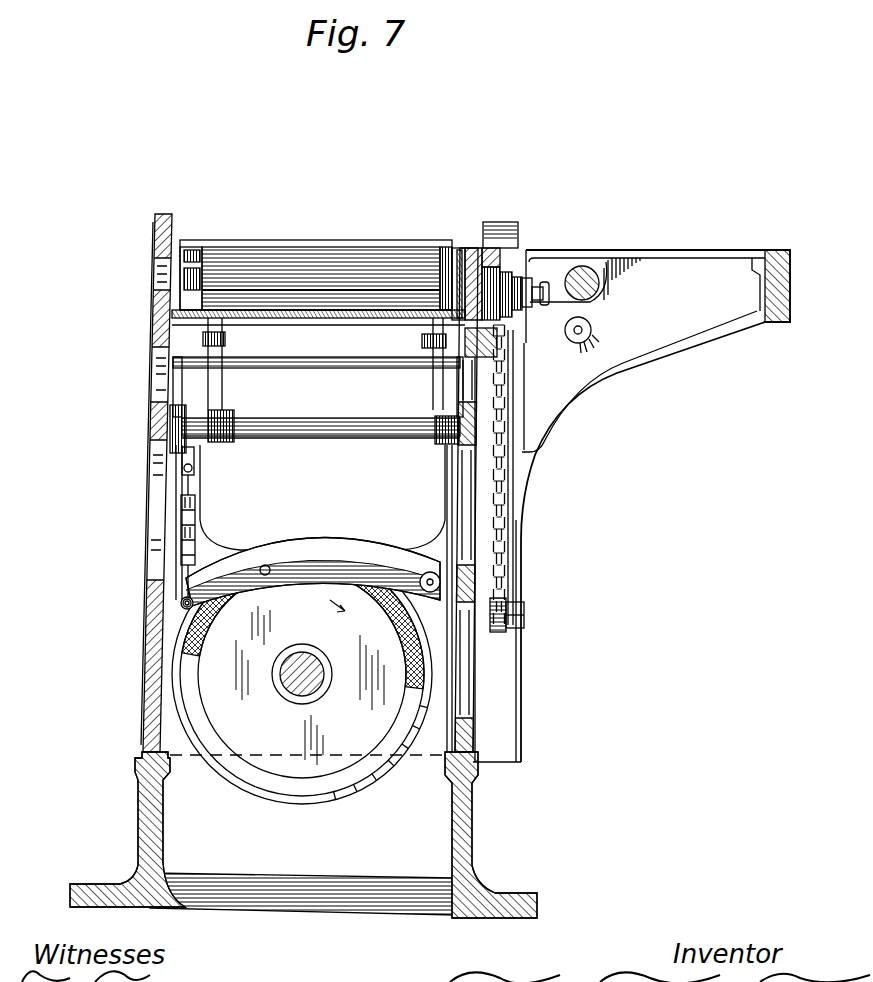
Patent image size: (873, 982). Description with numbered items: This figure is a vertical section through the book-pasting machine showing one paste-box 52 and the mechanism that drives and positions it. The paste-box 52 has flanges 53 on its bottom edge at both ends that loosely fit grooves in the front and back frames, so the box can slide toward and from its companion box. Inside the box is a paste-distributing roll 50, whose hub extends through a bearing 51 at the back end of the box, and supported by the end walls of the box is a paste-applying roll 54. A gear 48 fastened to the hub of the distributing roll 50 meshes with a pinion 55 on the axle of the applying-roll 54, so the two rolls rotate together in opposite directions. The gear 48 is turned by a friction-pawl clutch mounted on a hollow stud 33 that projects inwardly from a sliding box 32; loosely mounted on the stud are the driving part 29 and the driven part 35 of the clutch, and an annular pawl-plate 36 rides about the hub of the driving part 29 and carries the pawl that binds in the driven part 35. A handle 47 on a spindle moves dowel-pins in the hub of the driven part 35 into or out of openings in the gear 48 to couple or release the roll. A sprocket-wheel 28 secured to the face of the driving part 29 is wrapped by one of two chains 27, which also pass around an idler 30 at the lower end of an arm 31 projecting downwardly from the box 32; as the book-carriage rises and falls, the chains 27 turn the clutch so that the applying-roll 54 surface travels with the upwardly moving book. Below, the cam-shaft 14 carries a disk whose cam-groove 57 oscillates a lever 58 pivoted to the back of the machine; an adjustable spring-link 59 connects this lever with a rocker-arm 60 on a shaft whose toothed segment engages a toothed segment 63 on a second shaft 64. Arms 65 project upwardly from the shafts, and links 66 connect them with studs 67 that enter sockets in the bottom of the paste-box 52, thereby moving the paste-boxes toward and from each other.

The cam-shaft 14 is at (283, 688).
The chains 27 is at (504, 487).
The sprocket-wheel 28 is at (516, 275).
The driving part of the clutch 29 is at (502, 270).
The idlers 30 is at (505, 633).
The arms 31 is at (520, 545).
The boxes 32 is at (530, 320).
The hollow stud 33 is at (532, 272).
The driven part of the clutch 35 is at (475, 248).
The annular pawl-plate 36 is at (490, 247).
The handle 47 is at (607, 310).
The gear 48 is at (410, 322).
The paste-distributing roll 50 is at (312, 275).
The bearing 51 is at (410, 290).
The paste-box 52 is at (388, 245).
The flanges 53 is at (162, 313).
The paste-applying roll 54 is at (260, 262).
The pinion 55 is at (458, 260).
The cam-groove 57 is at (318, 788).
The lever 58 is at (347, 553).
The adjustable spring-link 59 is at (224, 507).
The rocker-arm 60 is at (200, 443).
The toothed segment 63 is at (168, 445).
The shaft 64 is at (335, 437).
The arms 65 is at (176, 375).
The links 66 is at (226, 339).
The studs 67 is at (200, 327).